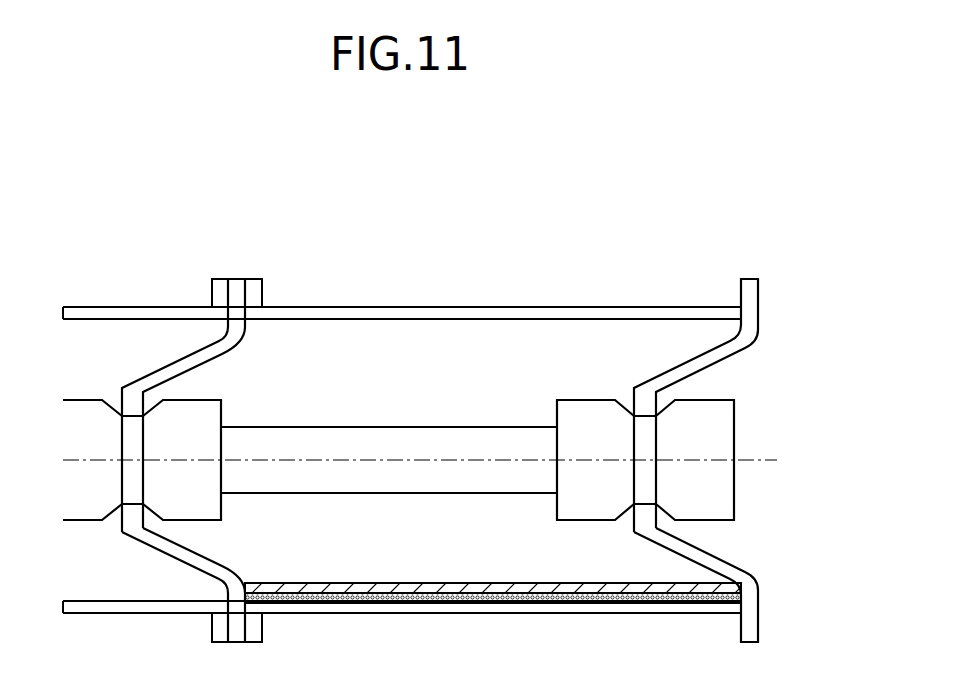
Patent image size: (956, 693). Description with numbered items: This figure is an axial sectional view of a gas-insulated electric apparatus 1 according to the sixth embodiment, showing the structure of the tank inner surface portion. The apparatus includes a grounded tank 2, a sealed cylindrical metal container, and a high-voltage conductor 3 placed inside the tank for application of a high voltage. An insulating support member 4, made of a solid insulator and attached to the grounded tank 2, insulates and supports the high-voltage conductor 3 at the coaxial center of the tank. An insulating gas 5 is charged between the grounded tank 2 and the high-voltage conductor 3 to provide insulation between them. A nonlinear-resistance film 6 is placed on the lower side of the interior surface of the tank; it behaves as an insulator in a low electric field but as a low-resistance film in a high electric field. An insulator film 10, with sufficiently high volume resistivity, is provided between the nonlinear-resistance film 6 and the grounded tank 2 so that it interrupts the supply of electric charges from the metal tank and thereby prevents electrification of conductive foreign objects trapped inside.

The gas-insulated electric apparatus 1 is at (263, 212).
The grounded tank 2 is at (460, 315).
The high-voltage conductor 3 is at (505, 435).
The insulating support member 4 is at (222, 574).
The insulating gas 5 is at (345, 365).
The nonlinear-resistance film 6 is at (445, 583).
The insulator film 10 is at (508, 597).